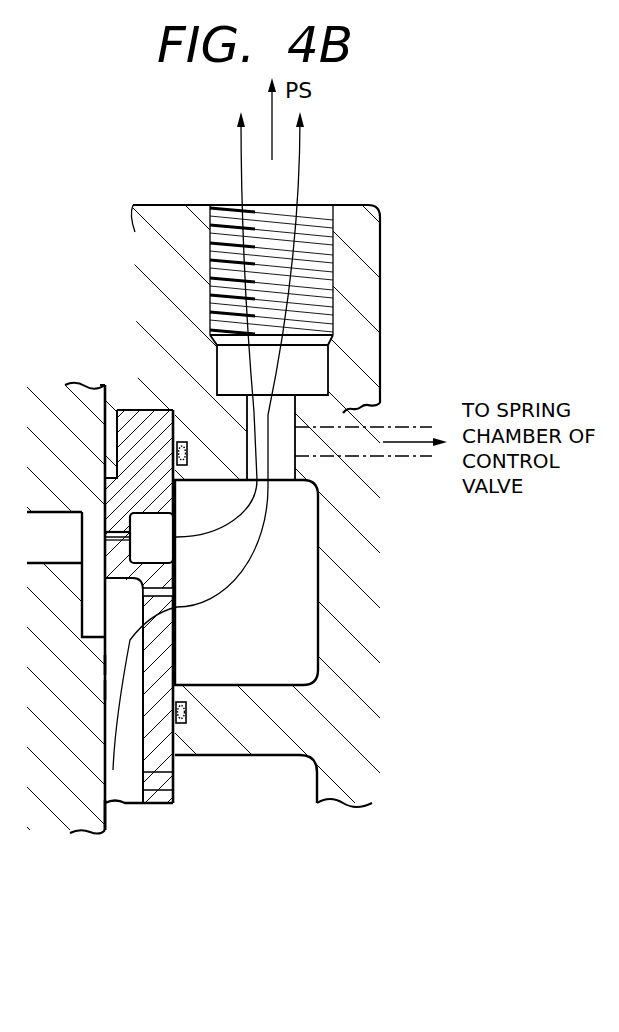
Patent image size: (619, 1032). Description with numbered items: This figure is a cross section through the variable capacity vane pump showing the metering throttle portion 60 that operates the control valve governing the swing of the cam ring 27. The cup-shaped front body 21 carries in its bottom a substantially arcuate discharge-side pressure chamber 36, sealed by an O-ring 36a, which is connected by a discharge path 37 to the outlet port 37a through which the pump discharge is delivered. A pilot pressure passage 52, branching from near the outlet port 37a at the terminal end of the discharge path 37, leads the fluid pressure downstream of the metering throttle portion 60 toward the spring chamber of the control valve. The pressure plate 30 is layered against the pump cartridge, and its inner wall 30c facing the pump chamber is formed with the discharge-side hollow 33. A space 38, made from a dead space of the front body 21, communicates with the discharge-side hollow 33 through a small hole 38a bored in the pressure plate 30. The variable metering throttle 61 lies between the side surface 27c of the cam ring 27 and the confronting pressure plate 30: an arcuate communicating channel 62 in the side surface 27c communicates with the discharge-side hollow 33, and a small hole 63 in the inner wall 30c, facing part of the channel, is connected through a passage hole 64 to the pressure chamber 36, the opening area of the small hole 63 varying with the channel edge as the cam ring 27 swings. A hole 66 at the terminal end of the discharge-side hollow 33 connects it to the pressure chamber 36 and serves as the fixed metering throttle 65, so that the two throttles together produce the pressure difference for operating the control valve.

The front body 21 is at (325, 743).
The cam ring 27 is at (72, 750).
The side surface of the cam ring 27c is at (100, 683).
The pressure plate 30 is at (150, 523).
The inner wall of the pressure plate 30c is at (72, 785).
The discharge-side hollow 33 is at (133, 628).
The discharge-side pressure chamber 36 is at (300, 578).
The O-ring 36a is at (186, 712).
The discharge path 37 is at (295, 410).
The outlet port 37a is at (323, 238).
The space 38 is at (267, 787).
The small hole 38a is at (167, 807).
The pilot pressure passage 52 is at (368, 447).
The metering throttle portion 60 is at (108, 480).
The variable metering throttle 61 is at (106, 498).
The communicating channel 62 is at (87, 613).
The small hole 63 is at (130, 535).
The passage hole 64 is at (160, 420).
The fixed metering throttle 65 is at (102, 663).
The hole 66 is at (176, 592).